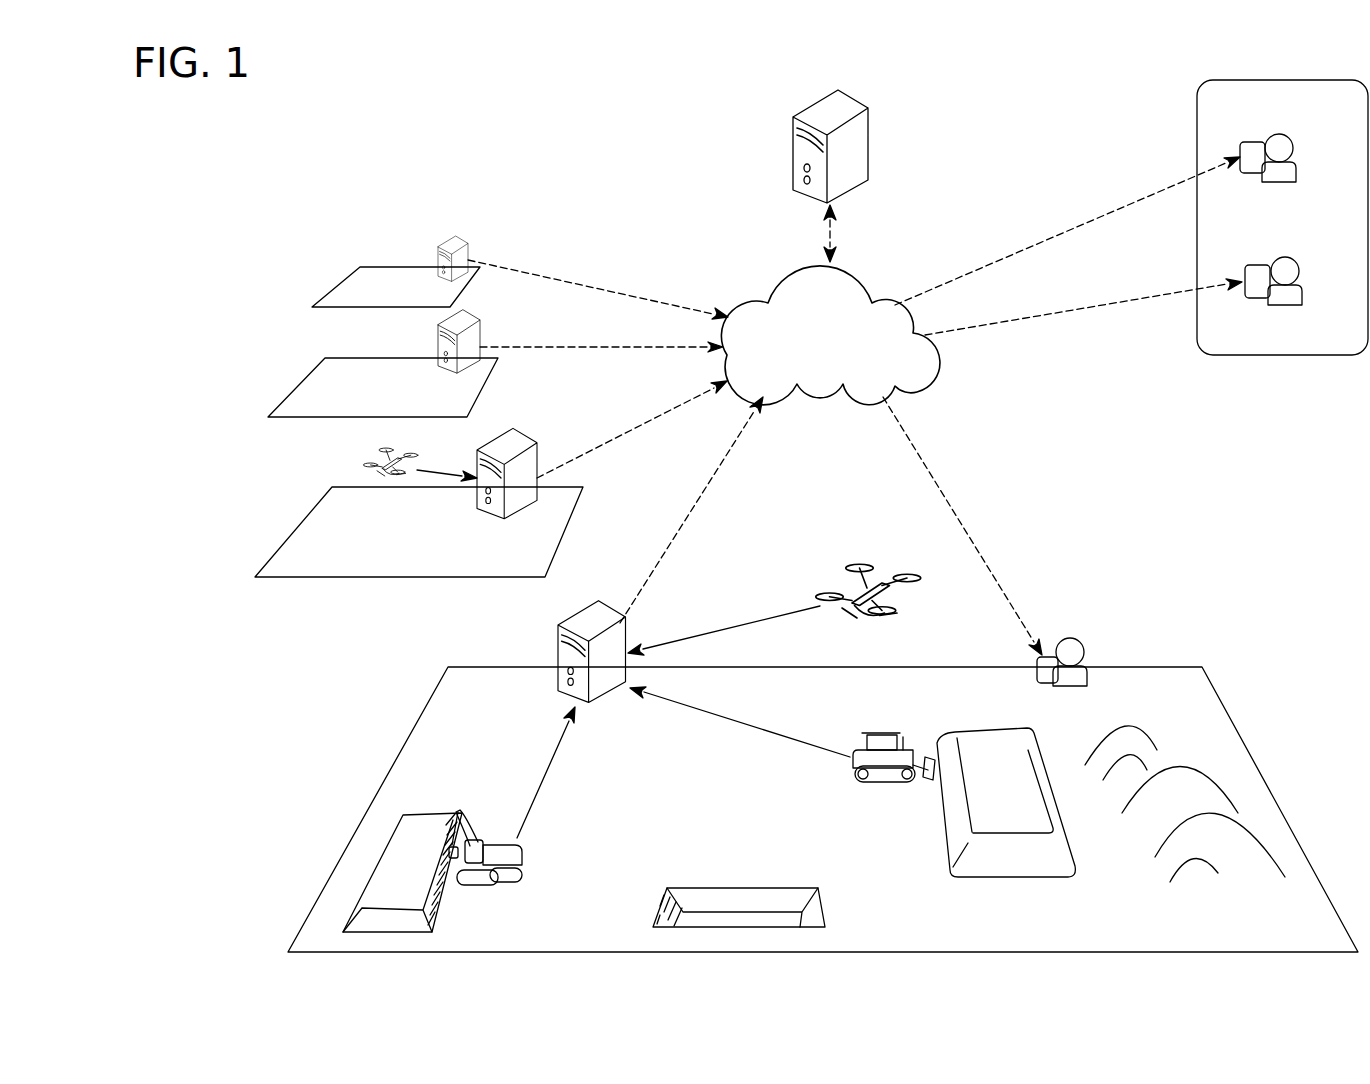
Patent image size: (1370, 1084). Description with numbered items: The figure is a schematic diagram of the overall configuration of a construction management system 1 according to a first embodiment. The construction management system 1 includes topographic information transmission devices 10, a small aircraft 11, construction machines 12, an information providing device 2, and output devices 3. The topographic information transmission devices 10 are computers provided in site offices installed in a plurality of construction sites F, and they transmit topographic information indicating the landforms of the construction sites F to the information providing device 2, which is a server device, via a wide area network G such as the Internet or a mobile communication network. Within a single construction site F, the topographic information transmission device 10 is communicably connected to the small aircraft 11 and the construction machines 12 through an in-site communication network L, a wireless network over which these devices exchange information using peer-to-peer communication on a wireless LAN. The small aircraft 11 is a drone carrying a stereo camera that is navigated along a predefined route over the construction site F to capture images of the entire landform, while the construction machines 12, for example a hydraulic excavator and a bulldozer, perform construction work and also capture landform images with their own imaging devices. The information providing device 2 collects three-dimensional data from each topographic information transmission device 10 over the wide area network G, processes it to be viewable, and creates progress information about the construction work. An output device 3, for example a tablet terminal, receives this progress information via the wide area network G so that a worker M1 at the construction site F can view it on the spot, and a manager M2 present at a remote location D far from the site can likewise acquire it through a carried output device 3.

The construction management system 1 is at (364, 158).
The information providing device 2 is at (797, 114).
The output device 3 is at (1037, 668).
The topographic information transmission device 10 is at (462, 236).
The small aircraft 11 is at (360, 462).
The construction machine 12 is at (525, 858).
The construction site F is at (338, 285).
The wide area network G is at (753, 303).
The in-site communication network L is at (722, 628).
The remote location D is at (1278, 357).
The worker M1 is at (1076, 641).
The manager M2 is at (1300, 157).